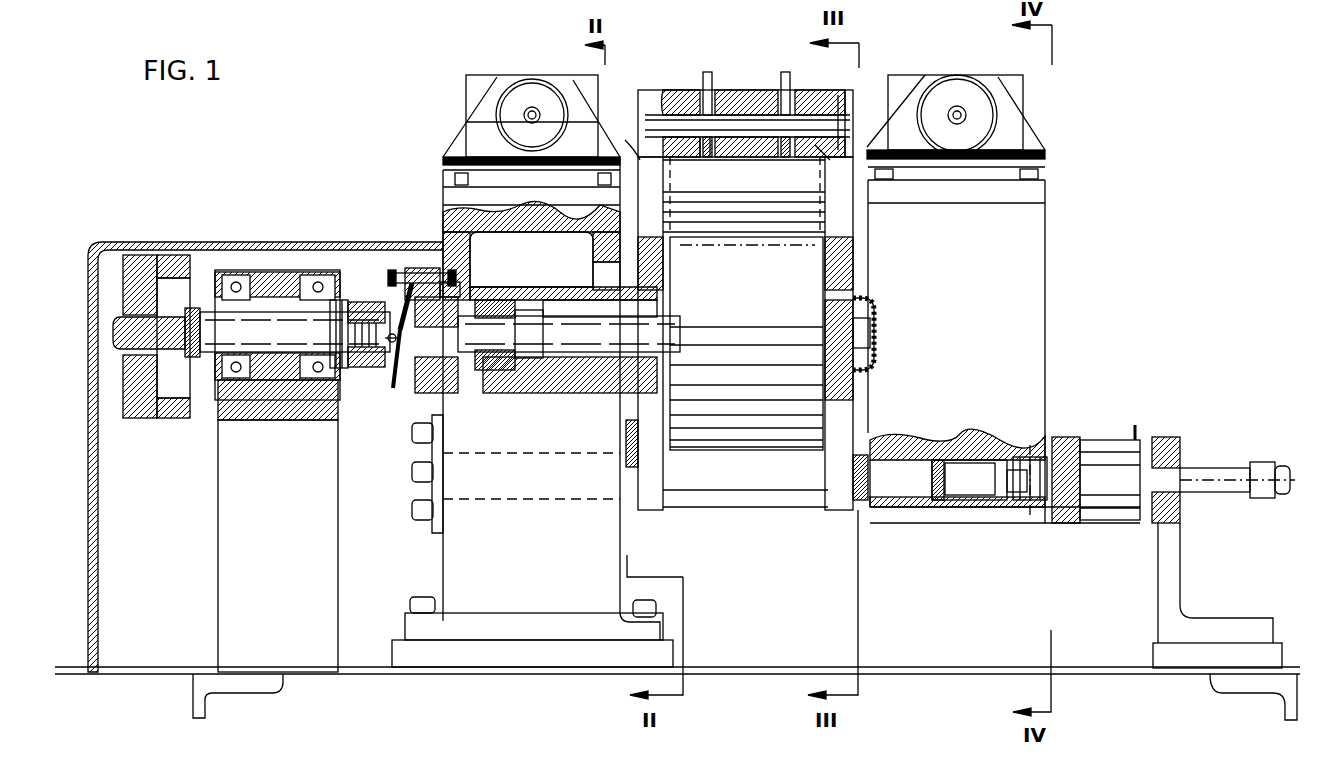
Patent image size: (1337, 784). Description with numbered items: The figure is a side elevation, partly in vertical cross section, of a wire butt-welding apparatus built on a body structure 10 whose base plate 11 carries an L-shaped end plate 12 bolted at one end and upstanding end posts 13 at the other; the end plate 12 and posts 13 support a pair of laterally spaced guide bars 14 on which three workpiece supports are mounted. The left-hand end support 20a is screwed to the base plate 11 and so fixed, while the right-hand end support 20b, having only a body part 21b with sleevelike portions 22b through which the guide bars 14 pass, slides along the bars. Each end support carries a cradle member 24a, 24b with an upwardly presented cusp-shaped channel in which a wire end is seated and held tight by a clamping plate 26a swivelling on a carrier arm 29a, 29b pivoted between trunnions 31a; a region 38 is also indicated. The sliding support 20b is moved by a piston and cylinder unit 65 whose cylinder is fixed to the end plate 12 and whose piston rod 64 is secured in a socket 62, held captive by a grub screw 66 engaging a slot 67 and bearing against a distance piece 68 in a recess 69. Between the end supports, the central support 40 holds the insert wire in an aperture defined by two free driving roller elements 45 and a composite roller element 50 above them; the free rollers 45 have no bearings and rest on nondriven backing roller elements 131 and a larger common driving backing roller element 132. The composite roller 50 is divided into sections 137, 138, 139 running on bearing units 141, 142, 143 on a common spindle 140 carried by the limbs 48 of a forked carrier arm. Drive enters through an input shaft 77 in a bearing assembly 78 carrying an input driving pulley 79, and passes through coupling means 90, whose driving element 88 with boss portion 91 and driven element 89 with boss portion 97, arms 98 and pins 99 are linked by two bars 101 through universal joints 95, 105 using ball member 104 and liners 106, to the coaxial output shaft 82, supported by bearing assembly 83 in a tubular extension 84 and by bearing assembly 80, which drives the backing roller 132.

The body structure 10 is at (385, 674).
The base plate 11 is at (330, 674).
The end plate 12 is at (1175, 580).
The end posts 13 is at (532, 560).
The guide bars 14 is at (630, 520).
The end support 20a is at (450, 180).
The end support 20b is at (1035, 130).
The body part 21b is at (1045, 262).
The sleevelike portions 22b is at (1112, 523).
The cradle member 24a is at (505, 165).
The cradle member 24b is at (1045, 176).
The clamping plate 26a is at (534, 140).
The carrier arm 29a is at (508, 80).
The carrier arm 29b is at (930, 75).
The trunnions 31a is at (470, 88).
The chamber 38 is at (600, 268).
The central support 40 is at (675, 62).
The driving roller elements 45 is at (703, 250).
The limbs 48 is at (708, 70).
The composite roller element 50 is at (740, 70).
The socket 62 is at (1012, 500).
The piston rod 64 is at (1070, 445).
The piston and cylinder unit 65 is at (1135, 430).
The grub screw 66 is at (1035, 500).
The slot 67 is at (1050, 435).
The distance piece 68 is at (968, 497).
The recess 69 is at (930, 500).
The input shaft 77 is at (270, 325).
The bearing assembly 78 is at (245, 268).
The input driving pulley 79 is at (98, 480).
The bearing assembly 80 is at (885, 320).
The output shaft 82 is at (598, 352).
The bearing assembly 83 is at (500, 393).
The tubular extension 84 is at (548, 393).
The driving element 88 is at (348, 292).
The driven element 89 is at (445, 258).
The coupling means 90 is at (413, 265).
The boss portion 91 is at (340, 290).
The universal joint 95 is at (398, 345).
The boss portion 97 is at (450, 400).
The arms 98 is at (440, 300).
The pins 99 is at (440, 282).
The bars 101 is at (348, 367).
The ball member 104 is at (403, 268).
The universal joint 105 is at (420, 268).
The liners 106 is at (392, 333).
The backing roller elements 131 is at (772, 250).
The driving backing roller element 132 is at (760, 450).
The roller section 137 is at (680, 88).
The roller section 138 is at (752, 90).
The roller section 139 is at (812, 90).
The common spindle 140 is at (720, 145).
The bearing unit 141 is at (672, 92).
The bearing unit 142 is at (745, 145).
The bearing unit 143 is at (640, 150).